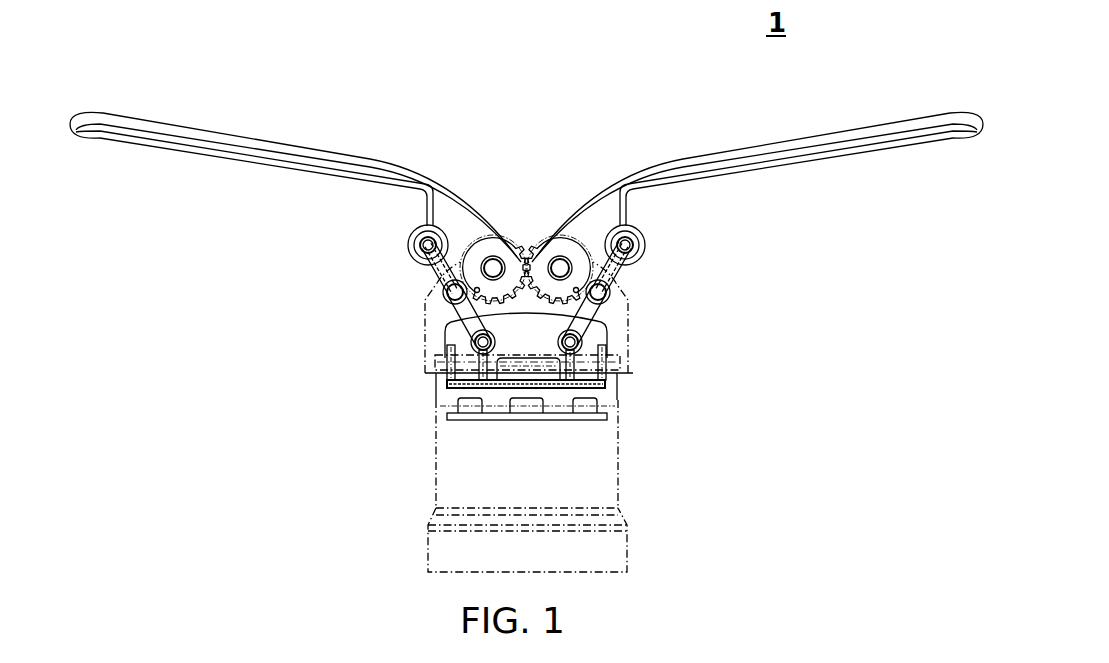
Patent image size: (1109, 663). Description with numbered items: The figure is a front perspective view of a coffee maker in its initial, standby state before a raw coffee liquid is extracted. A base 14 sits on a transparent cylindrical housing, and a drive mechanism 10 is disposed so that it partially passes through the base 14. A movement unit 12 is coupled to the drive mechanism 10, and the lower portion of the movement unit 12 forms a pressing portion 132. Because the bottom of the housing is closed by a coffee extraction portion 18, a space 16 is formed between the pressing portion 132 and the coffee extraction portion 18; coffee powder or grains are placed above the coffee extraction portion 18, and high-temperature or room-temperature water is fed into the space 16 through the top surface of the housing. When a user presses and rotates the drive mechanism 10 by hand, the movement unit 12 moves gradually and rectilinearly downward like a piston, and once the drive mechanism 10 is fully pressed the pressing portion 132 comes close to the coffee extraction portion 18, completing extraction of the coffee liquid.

The drive mechanism 10 is at (693, 150).
The movement unit 12 is at (540, 330).
The base 14 is at (433, 345).
The pressing portion 132 is at (557, 408).
The space 16 is at (443, 450).
The coffee extraction portion 18 is at (613, 542).